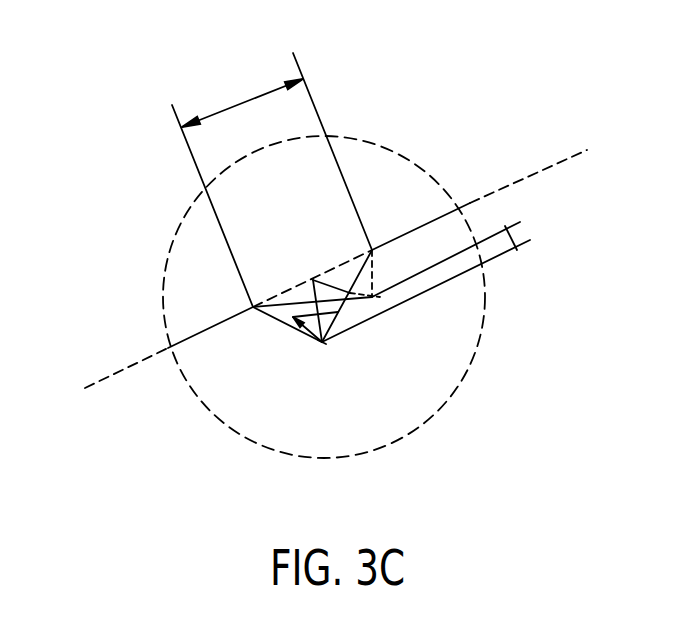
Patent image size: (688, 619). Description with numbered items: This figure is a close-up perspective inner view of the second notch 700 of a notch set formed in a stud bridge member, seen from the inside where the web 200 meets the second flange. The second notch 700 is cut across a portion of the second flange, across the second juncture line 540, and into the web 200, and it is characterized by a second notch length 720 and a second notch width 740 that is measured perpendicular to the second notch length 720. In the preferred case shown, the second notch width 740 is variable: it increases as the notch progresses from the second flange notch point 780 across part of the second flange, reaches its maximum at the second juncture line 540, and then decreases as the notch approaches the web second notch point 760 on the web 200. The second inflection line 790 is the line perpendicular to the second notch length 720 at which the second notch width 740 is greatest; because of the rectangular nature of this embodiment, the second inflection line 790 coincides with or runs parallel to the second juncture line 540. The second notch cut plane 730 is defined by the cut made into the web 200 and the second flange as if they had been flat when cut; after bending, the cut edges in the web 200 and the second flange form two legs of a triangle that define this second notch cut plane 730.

The second notch 700 is at (135, 195).
The second notch width 740 is at (240, 102).
The second inflection line 790 is at (253, 307).
The second juncture line 540 is at (552, 162).
The second notch length 720 is at (527, 226).
The second notch cut plane 730 is at (342, 286).
The second flange notch point 780 is at (372, 297).
The web second notch point 760 is at (322, 342).
The web 200 is at (263, 348).